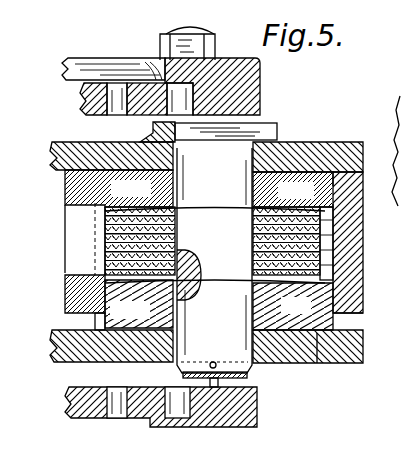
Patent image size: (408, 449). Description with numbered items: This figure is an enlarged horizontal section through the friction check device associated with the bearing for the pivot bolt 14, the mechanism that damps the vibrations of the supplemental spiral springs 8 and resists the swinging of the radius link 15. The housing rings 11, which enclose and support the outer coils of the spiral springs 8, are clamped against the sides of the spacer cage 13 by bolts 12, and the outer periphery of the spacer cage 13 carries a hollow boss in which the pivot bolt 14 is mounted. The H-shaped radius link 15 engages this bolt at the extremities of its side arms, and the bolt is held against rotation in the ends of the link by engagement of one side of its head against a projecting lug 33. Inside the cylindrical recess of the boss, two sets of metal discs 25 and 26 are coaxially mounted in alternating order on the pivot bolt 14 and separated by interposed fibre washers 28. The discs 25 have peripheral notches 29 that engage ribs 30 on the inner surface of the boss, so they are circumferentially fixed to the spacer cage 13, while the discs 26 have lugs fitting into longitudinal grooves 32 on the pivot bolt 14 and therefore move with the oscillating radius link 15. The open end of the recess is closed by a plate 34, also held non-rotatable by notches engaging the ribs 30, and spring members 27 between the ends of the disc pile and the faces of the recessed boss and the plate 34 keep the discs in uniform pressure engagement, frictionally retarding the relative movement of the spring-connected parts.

The flat spiral spring 8 is at (142, 85).
The housing ring 11 is at (261, 70).
The bolt 12 is at (196, 33).
The spacer cage 13 is at (364, 300).
The pivot bolt 14 is at (277, 132).
The radius link 15 is at (331, 146).
The metal disc 25 is at (343, 233).
The metal disc 26 is at (333, 217).
The spring member 27 is at (214, 210).
The washer 28 is at (112, 224).
The peripheral notch 29 is at (95, 323).
The rib 30 is at (333, 218).
The longitudinal groove 32 is at (158, 193).
The projecting lug 33 is at (152, 130).
The plate 34 is at (318, 363).